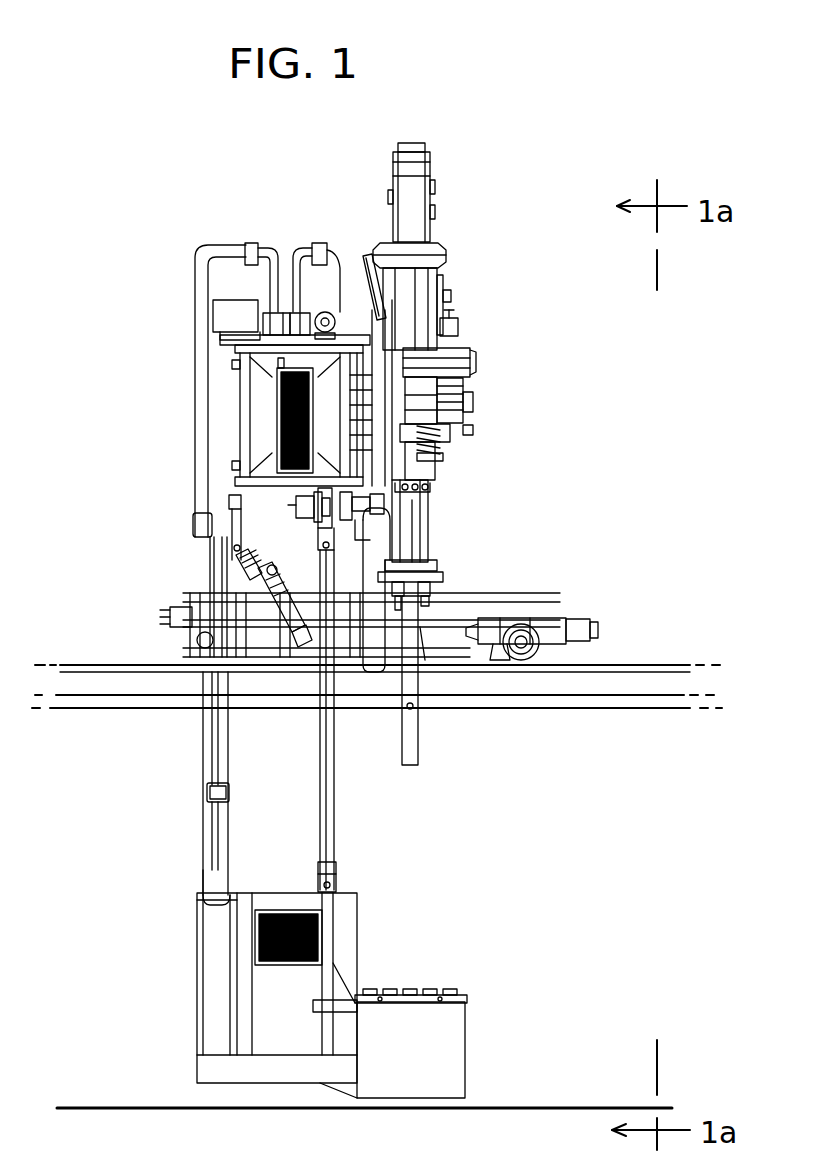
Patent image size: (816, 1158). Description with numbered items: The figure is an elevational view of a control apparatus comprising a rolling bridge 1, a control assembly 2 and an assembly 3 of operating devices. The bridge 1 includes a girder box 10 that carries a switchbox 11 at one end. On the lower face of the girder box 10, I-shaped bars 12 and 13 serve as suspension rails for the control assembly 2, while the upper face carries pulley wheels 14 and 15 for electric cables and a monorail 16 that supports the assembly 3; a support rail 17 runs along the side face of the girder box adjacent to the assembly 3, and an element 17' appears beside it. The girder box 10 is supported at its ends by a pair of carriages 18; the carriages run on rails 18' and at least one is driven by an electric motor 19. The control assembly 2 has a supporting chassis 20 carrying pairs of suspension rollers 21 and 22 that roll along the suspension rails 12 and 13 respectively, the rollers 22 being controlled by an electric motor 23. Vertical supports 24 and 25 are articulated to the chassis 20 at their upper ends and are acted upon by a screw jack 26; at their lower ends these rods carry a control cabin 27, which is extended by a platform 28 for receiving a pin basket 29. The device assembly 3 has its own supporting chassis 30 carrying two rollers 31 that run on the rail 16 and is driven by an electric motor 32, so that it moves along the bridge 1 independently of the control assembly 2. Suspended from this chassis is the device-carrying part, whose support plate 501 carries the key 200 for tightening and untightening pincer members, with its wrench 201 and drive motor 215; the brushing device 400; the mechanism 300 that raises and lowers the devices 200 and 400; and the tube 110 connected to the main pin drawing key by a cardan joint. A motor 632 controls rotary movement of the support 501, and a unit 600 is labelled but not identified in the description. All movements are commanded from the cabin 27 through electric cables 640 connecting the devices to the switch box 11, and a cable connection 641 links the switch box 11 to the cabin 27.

The rolling bridge 1 is at (236, 393).
The control assembly 2 is at (200, 843).
The assembly of operating devices 3 is at (428, 144).
The girder box 10 is at (243, 440).
The switchbox 11 is at (283, 420).
The I-shaped bar 12 is at (236, 499).
The I-shaped bar 13 is at (362, 512).
The pulley wheel 14 is at (270, 320).
The pulley wheel 15 is at (337, 297).
The monorail 16 is at (352, 344).
The support rail 17 is at (421, 515).
The rod 17' is at (472, 519).
The carriage 18 is at (377, 682).
The rail 18' is at (377, 731).
The electric motor 19 is at (575, 636).
The supporting chassis 20 is at (292, 523).
The suspension rollers 21 is at (237, 508).
The suspension rollers 22 is at (352, 516).
The electric motor 23 is at (296, 508).
The vertical support 24 is at (215, 755).
The vertical support 25 is at (335, 805).
The screw jack 26 is at (242, 573).
The control cabin 27 is at (286, 992).
The platform 28 is at (347, 1087).
The pin basket 29 is at (445, 1015).
The supporting chassis 30 is at (430, 460).
The roller 31 is at (368, 280).
The electric motor 32 is at (326, 312).
The tube 110 is at (414, 750).
The key for tightening and untightening pincer members 200 is at (440, 615).
The key or wrench 201 is at (422, 630).
The motor 215 is at (440, 601).
The mechanism 300 is at (393, 608).
The brushing device 400 is at (438, 590).
The support plate 501 is at (432, 568).
The drive unit 600 is at (497, 355).
The motor 632 is at (470, 400).
The electric cables 640 is at (297, 260).
The cable connection 641 is at (276, 253).